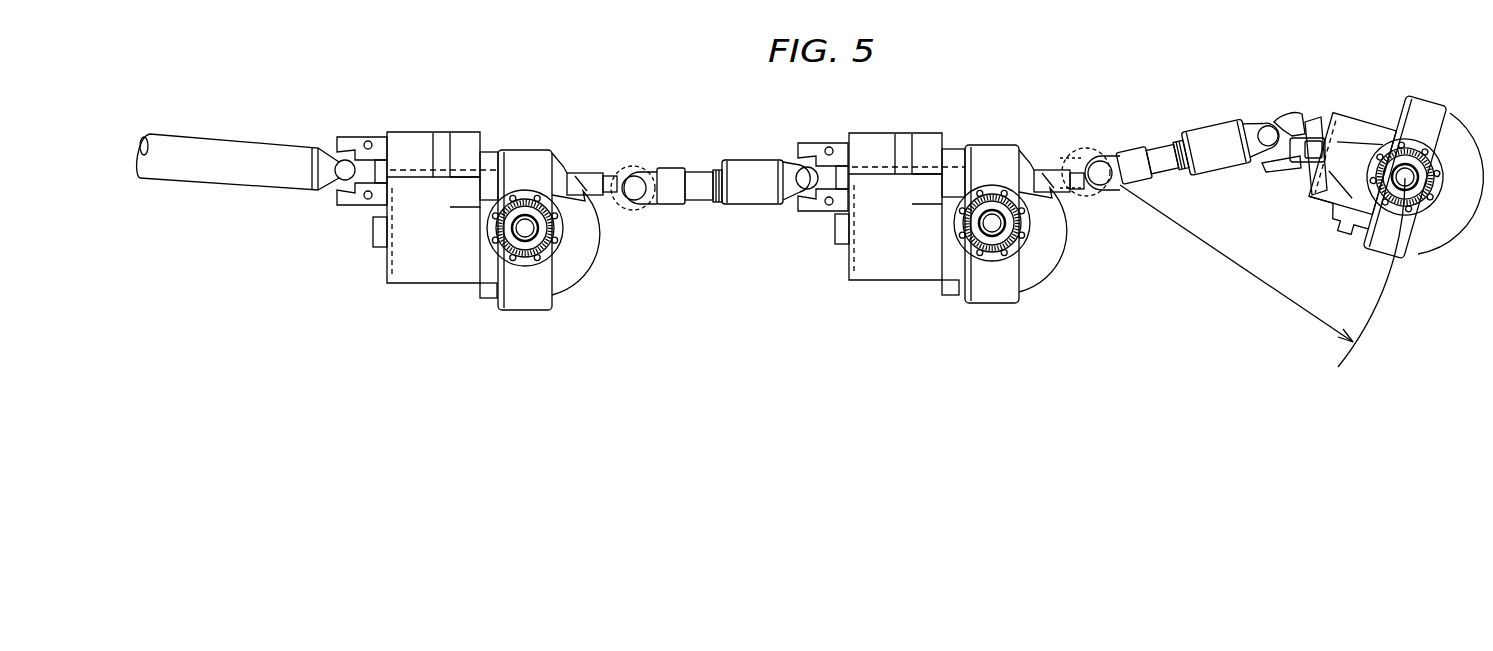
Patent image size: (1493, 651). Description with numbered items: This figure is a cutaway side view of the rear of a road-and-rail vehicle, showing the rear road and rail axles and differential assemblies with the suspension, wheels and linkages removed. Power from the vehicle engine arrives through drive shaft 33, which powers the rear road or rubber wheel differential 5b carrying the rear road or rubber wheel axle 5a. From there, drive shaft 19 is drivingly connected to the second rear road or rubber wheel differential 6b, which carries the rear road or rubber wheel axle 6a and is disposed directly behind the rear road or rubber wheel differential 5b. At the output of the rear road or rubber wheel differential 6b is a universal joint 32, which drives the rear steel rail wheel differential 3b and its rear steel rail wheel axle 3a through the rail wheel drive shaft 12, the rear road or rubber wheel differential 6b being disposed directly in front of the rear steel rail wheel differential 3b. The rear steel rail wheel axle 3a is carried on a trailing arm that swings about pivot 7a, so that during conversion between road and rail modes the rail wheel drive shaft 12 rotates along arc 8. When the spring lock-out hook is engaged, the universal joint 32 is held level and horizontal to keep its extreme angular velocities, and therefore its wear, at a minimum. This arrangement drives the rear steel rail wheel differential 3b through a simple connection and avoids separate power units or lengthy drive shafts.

The drive shaft 33 is at (224, 139).
The rear road or rubber wheel axle 5a is at (530, 228).
The rear road or rubber wheel differential 5b is at (390, 273).
The drive shaft 19 is at (763, 160).
The rear road or rubber wheel axle 6a is at (988, 224).
The rear road or rubber wheel differential 6b is at (860, 277).
The universal joint 32 is at (1076, 150).
The pivot 7a is at (1105, 158).
The rail wheel drive shaft 12 is at (1203, 130).
The rear steel rail wheel axle 3a is at (1408, 176).
The rear steel rail wheel differential 3b is at (1457, 237).
The arc 8 is at (1262, 272).